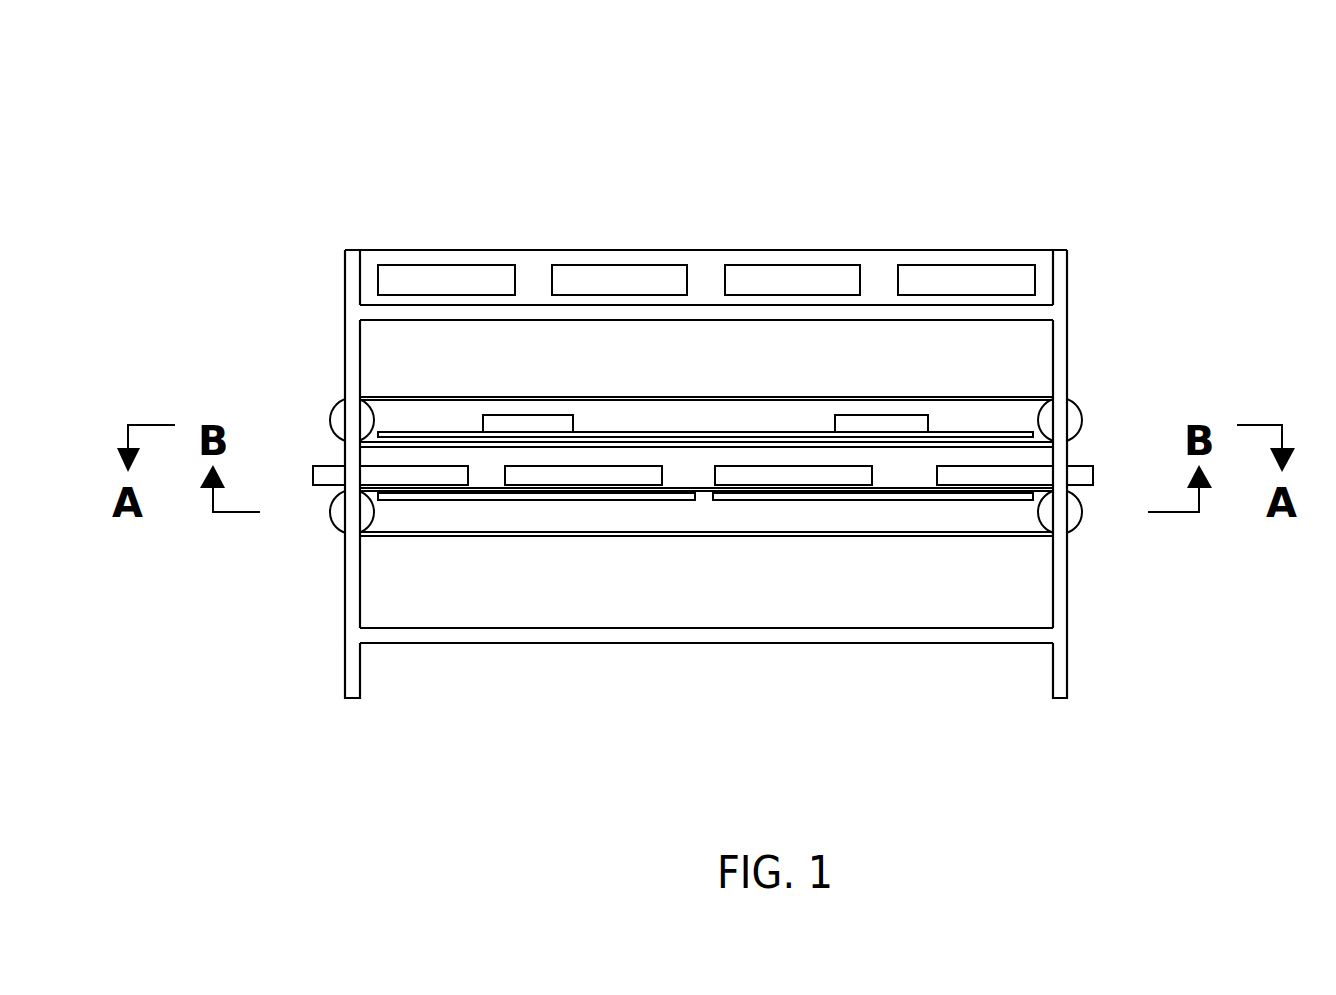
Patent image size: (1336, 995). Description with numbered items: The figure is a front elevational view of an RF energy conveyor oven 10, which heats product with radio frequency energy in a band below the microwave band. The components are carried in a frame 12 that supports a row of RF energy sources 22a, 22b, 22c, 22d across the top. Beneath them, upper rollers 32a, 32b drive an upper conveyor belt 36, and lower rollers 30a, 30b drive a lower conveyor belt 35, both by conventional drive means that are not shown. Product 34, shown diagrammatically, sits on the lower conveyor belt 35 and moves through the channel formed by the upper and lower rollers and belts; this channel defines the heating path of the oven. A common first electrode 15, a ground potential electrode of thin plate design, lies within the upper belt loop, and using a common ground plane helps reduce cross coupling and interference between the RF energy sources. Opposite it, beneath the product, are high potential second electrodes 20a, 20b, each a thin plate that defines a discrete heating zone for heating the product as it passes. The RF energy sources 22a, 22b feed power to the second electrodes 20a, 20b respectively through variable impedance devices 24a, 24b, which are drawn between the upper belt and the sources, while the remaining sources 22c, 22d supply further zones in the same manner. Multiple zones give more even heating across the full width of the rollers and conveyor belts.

The RF energy conveyor oven 10 is at (693, 143).
The frame 12 is at (1060, 310).
The first electrode 15 is at (752, 430).
The second electrode 20a is at (445, 488).
The second electrode 20b is at (872, 488).
The RF energy source 22a is at (437, 282).
The RF energy source 22b is at (620, 282).
The RF energy source 22c is at (785, 282).
The RF energy source 22d is at (950, 282).
The variable impedance device 24a is at (517, 424).
The variable impedance device 24b is at (874, 420).
The lower roller 30a is at (335, 515).
The lower roller 30b is at (1072, 508).
The upper roller 32a is at (340, 418).
The upper roller 32b is at (1072, 418).
The product 34 is at (320, 478).
The lower conveyor belt 35 is at (605, 537).
The upper conveyor belt 36 is at (660, 398).